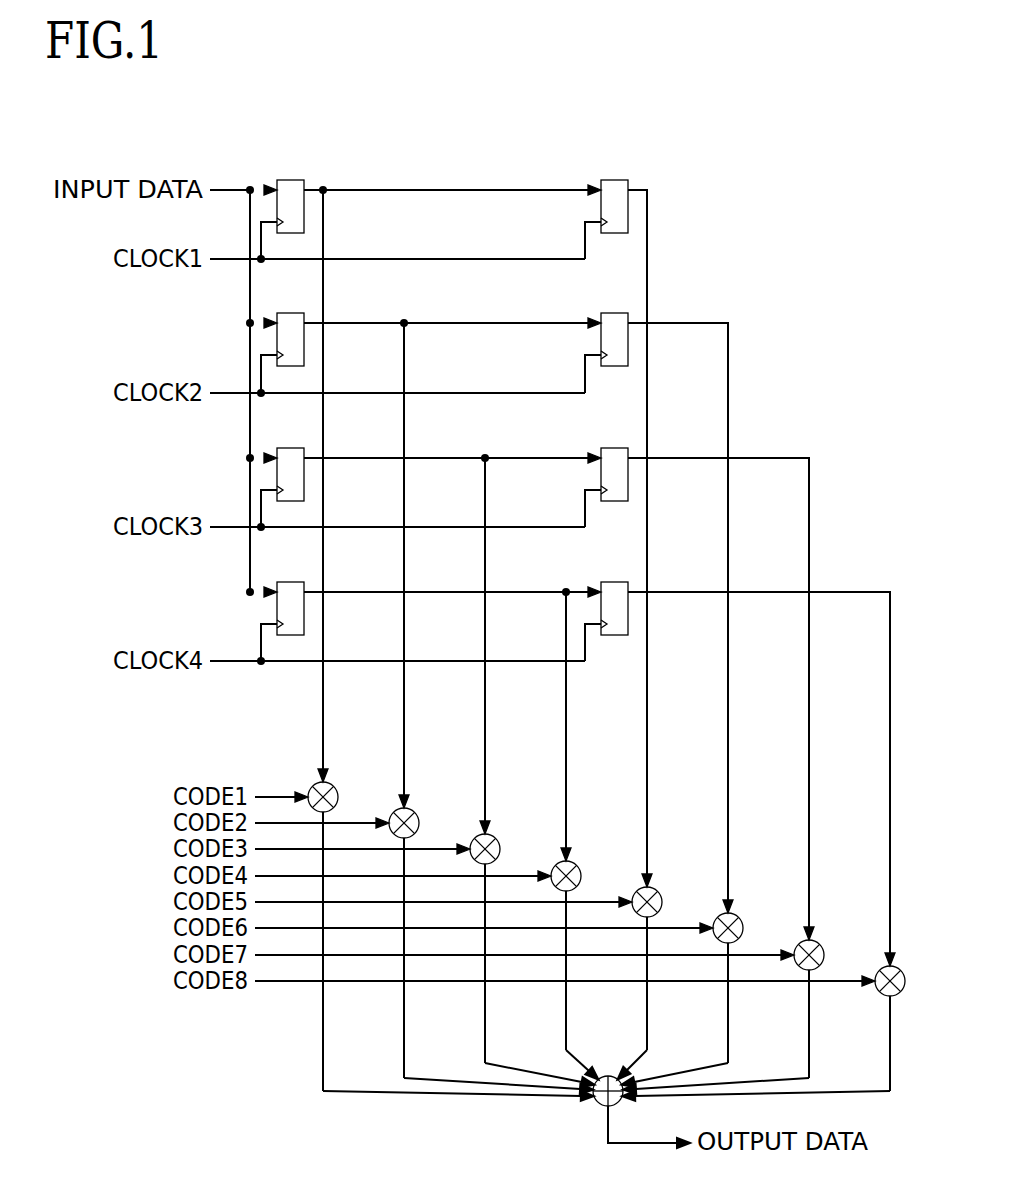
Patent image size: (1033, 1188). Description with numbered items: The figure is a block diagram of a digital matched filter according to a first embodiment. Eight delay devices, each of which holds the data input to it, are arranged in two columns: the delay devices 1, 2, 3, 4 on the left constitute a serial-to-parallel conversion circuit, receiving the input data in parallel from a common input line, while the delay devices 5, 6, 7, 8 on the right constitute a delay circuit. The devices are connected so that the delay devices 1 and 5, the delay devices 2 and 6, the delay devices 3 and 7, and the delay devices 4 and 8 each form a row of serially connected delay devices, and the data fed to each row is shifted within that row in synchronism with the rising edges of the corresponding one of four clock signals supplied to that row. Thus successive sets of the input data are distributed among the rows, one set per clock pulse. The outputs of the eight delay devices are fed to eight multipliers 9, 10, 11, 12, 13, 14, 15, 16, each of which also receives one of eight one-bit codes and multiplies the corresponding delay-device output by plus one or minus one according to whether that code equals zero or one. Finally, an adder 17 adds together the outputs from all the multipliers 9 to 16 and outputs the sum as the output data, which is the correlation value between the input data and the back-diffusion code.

The delay device 1 is at (292, 180).
The delay device 2 is at (292, 313).
The delay device 3 is at (292, 448).
The delay device 4 is at (292, 582).
The delay device 5 is at (616, 180).
The delay device 6 is at (616, 313).
The delay device 7 is at (616, 448).
The delay device 8 is at (616, 582).
The multiplier 9 is at (334, 786).
The multiplier 10 is at (415, 812).
The multiplier 11 is at (496, 838).
The multiplier 12 is at (577, 865).
The multiplier 13 is at (658, 891).
The multiplier 14 is at (739, 917).
The multiplier 15 is at (820, 944).
The multiplier 16 is at (901, 970).
The adder 17 is at (608, 1075).